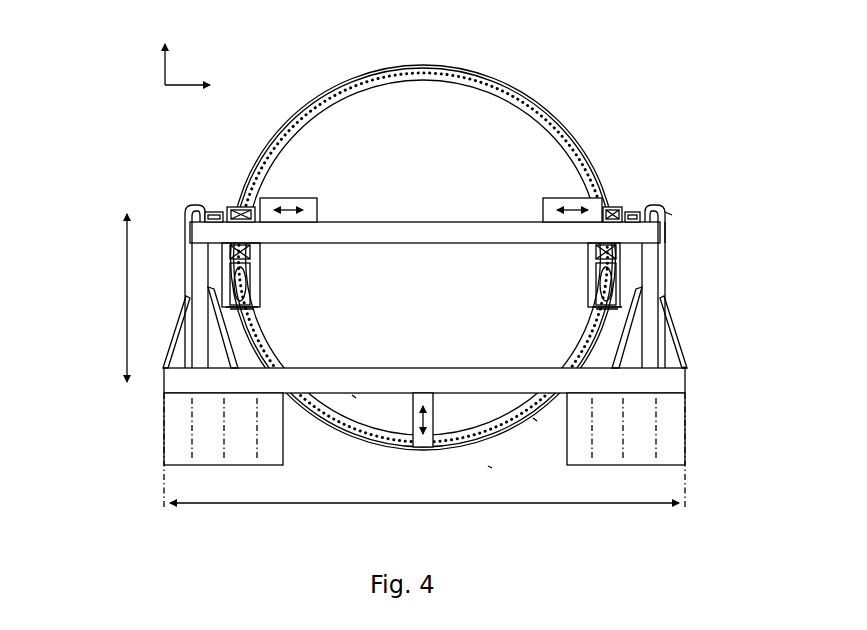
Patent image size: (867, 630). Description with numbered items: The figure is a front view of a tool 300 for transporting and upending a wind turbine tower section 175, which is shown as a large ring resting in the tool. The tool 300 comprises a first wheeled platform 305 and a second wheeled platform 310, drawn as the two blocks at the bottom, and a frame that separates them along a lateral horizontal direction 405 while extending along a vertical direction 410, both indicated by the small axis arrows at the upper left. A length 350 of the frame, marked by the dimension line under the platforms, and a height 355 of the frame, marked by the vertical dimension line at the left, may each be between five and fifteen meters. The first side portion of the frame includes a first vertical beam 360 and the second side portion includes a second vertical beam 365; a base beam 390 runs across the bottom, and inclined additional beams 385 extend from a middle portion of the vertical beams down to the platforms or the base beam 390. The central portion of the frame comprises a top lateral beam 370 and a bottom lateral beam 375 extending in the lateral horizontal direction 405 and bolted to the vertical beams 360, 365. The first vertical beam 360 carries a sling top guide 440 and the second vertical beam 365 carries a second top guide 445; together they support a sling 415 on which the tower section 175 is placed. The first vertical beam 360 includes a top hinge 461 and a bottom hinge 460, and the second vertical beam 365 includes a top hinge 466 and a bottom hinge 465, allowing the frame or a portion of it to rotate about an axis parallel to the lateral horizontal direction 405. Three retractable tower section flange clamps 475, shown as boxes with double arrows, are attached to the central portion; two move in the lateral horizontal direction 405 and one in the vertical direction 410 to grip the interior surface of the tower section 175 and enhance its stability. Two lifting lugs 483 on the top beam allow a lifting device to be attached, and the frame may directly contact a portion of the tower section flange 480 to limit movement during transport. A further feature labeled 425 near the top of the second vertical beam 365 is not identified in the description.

The wind turbine tower section 175 is at (306, 100).
The tower section flange 480 is at (530, 106).
The vertical direction 410 is at (143, 58).
The lateral horizontal direction 405 is at (194, 98).
The base beam 390 is at (668, 378).
The first wheeled platform 305 is at (186, 445).
The second wheeled platform 310 is at (665, 458).
The top lateral beam 370 is at (437, 226).
The first vertical beam 360 is at (190, 205).
The top hinge 461 is at (182, 228).
The bottom hinge 460 is at (188, 352).
The second top guide 445 is at (655, 205).
The second vertical beam 365 is at (650, 308).
The inclined additional beam 385 is at (663, 345).
The bottom hinge 465 is at (683, 367).
The column hook 425 is at (680, 217).
The top hinge 466 is at (668, 228).
The lifting lug 483 is at (241, 207).
The sling top guide 440 is at (212, 212).
The height of the frame 355 is at (127, 237).
The tower section flange clamp 475 is at (290, 198).
The length of the frame 350 is at (246, 504).
The bottom lateral beam 375 is at (356, 398).
The sling 415 is at (536, 421).
The tool 300 is at (491, 468).